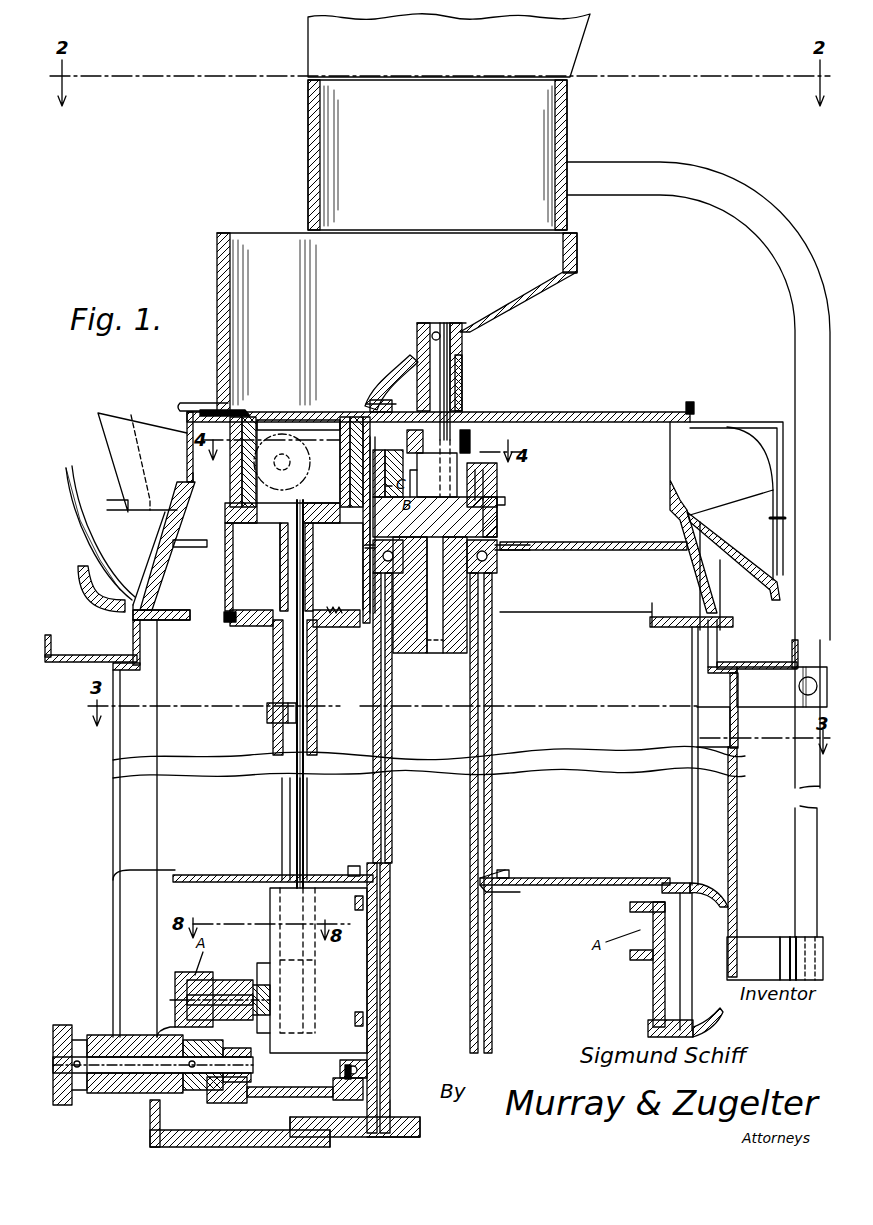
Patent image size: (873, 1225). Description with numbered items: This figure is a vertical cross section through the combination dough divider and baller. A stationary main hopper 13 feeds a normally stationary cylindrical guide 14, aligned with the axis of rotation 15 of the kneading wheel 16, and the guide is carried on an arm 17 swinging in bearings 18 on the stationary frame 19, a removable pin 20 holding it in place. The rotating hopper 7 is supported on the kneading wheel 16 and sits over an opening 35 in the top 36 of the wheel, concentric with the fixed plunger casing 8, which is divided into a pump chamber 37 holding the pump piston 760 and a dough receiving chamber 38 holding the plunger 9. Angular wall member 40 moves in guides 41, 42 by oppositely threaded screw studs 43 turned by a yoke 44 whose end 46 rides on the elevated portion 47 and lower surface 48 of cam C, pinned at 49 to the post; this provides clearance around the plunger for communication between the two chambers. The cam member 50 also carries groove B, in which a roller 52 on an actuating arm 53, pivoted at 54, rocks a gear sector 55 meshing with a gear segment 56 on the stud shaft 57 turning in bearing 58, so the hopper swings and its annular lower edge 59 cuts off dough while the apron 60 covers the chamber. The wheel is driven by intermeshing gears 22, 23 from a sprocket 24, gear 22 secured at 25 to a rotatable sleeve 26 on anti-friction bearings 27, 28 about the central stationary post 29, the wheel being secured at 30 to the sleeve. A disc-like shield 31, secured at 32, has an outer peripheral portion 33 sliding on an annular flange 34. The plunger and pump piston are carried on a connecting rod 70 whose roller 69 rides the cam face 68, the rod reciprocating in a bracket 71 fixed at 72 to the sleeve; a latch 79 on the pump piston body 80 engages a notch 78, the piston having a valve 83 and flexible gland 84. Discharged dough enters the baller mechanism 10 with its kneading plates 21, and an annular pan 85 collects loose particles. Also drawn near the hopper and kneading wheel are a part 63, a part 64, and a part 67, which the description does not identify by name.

The rotating hopper 7 is at (493, 300).
The plunger casing 8 is at (268, 410).
The plunger 9 is at (266, 522).
The baller mechanism 10 is at (115, 440).
The main hopper 13 is at (580, 60).
The cylindrical guide 14 is at (565, 136).
The axis of rotation 15 is at (448, 322).
The kneading wheel 16 is at (578, 412).
The arm 17 is at (780, 262).
The bearings 18 is at (796, 664).
The stationary frame 19 is at (738, 870).
The removable pin 20 is at (800, 684).
The kneading plates 21 is at (735, 425).
The gear 22 is at (236, 1100).
The gear 23 is at (210, 1100).
The sprocket 24 is at (68, 1103).
The securing point 25 is at (340, 1071).
The rotatable sleeve 26 is at (368, 1000).
The anti-friction bearing 27 is at (350, 1060).
The anti-friction bearing 28 is at (494, 566).
The central stationary post 29 is at (368, 968).
The securing point 30 is at (505, 544).
The disc-like shield 31 is at (592, 878).
The securing point 32 is at (355, 875).
The outer peripheral portion 33 is at (665, 882).
The annular flange 34 is at (668, 895).
The opening 35 is at (375, 402).
The top of the kneading wheel 36 is at (518, 412).
The pump chamber 37 is at (266, 626).
The dough receiving chamber 38 is at (258, 416).
The angular wall member 40 is at (360, 418).
The guide 41 is at (245, 478).
The guide 42 is at (352, 480).
The screw studs 43 is at (284, 462).
The yoke 44 is at (338, 420).
The end of the yoke 46 is at (384, 468).
The elevated portion 47 is at (392, 480).
The lower surface 48 is at (500, 490).
The pin 49 is at (458, 636).
The cam member 50 is at (500, 525).
The roller 52 is at (506, 502).
The actuating arm 53 is at (490, 478).
The pivot 54 is at (466, 395).
The gear sector 55 is at (472, 442).
The gear segment 56 is at (470, 430).
The stud shaft 57 is at (424, 322).
The bearing 58 is at (466, 372).
The annular lower edge 59 is at (237, 410).
The apron 60 is at (392, 406).
The lever 63 is at (182, 402).
The stud 64 is at (686, 406).
The bracket 67 is at (778, 420).
The cam face 68 is at (640, 950).
The roller 69 is at (205, 980).
The connecting rod 70 is at (287, 810).
The bracket 71 is at (270, 910).
The securing point 72 is at (354, 908).
The notch 78 is at (283, 722).
The latch 79 is at (268, 716).
The pump piston body 80 is at (274, 684).
The valve 83 is at (242, 628).
The flexible gland 84 is at (362, 628).
The annular pan 85 is at (66, 664).
The pump piston 760 is at (342, 606).